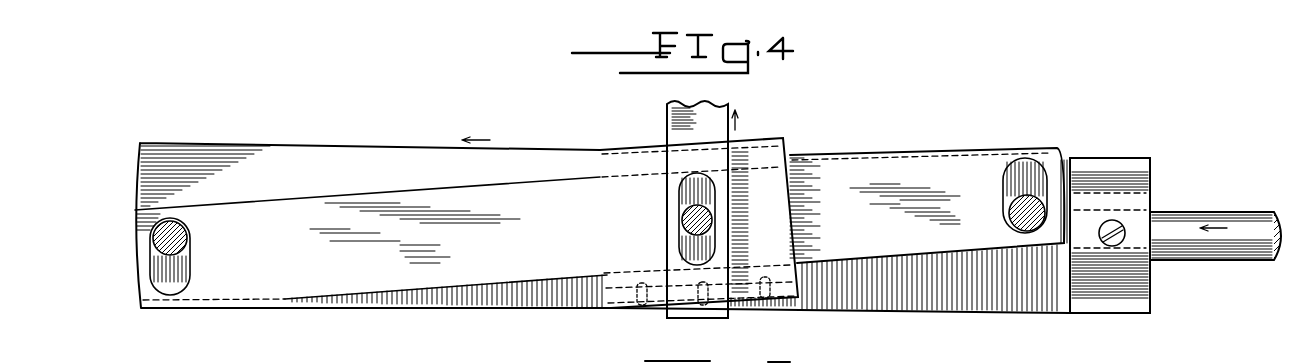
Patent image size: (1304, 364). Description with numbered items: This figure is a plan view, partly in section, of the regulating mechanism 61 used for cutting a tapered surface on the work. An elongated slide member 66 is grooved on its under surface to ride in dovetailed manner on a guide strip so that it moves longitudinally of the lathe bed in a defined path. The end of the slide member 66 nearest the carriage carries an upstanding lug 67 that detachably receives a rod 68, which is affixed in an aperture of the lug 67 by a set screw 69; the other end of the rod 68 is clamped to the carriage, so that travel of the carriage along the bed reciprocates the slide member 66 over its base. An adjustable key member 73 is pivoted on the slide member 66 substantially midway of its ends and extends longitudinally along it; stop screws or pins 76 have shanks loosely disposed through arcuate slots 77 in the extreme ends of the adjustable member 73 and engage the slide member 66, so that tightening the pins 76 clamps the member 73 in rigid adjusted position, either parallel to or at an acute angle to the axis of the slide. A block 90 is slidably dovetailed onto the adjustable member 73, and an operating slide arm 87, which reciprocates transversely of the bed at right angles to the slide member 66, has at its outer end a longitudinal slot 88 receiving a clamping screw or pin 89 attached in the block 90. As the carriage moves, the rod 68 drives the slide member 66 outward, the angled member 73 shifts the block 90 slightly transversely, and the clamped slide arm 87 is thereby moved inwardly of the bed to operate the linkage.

The regulating mechanism 61 is at (857, 313).
The slide member 66 is at (958, 293).
The upstanding lug 67 is at (1105, 267).
The rod 68 is at (1205, 240).
The set screw 69 is at (1112, 223).
The adjustable key member 73 is at (503, 257).
The stop screws or pins 76 is at (183, 243).
The arcuate slots 77 is at (190, 270).
The operating slide arm 87 is at (700, 125).
The slot 88 is at (690, 193).
The clamping screw or pin 89 is at (693, 222).
The block 90 is at (762, 192).